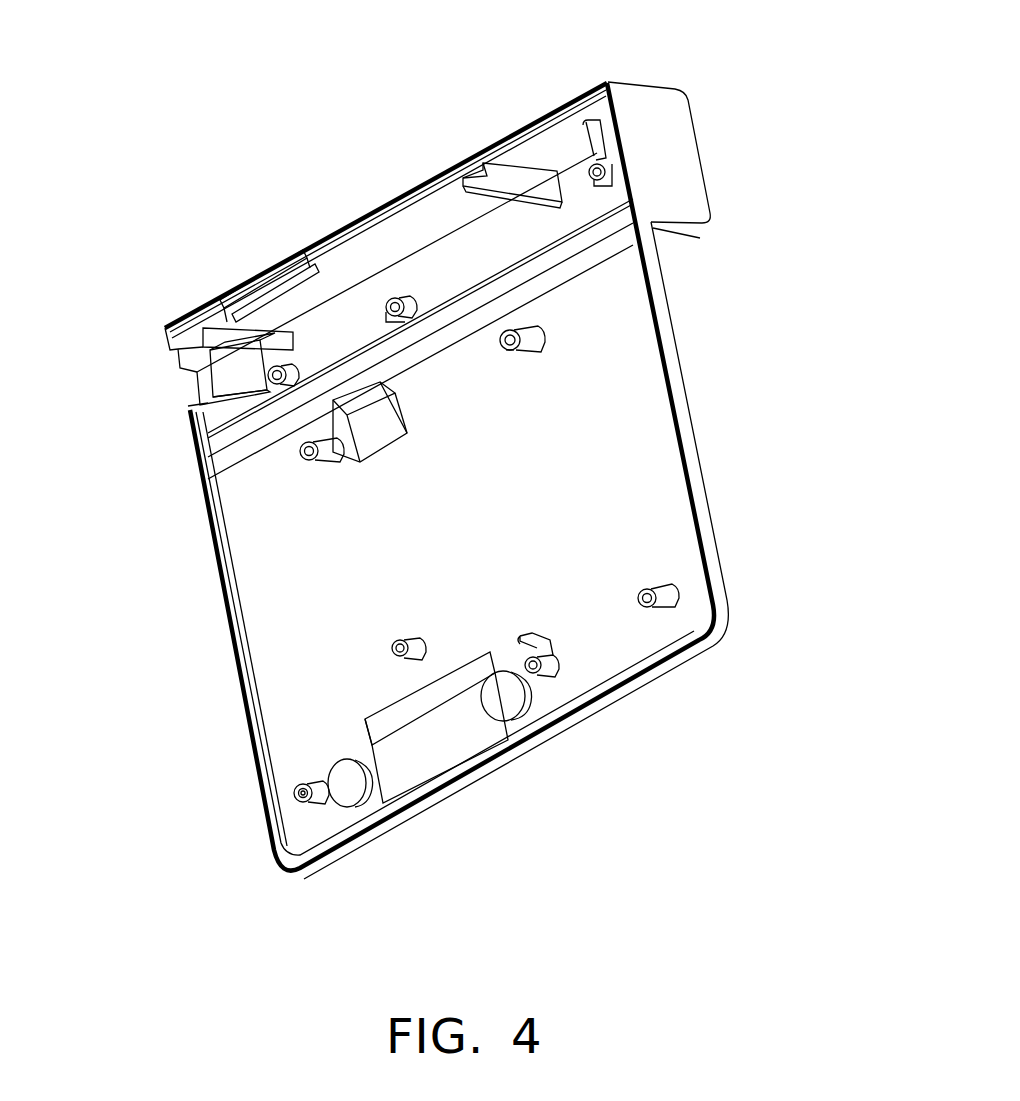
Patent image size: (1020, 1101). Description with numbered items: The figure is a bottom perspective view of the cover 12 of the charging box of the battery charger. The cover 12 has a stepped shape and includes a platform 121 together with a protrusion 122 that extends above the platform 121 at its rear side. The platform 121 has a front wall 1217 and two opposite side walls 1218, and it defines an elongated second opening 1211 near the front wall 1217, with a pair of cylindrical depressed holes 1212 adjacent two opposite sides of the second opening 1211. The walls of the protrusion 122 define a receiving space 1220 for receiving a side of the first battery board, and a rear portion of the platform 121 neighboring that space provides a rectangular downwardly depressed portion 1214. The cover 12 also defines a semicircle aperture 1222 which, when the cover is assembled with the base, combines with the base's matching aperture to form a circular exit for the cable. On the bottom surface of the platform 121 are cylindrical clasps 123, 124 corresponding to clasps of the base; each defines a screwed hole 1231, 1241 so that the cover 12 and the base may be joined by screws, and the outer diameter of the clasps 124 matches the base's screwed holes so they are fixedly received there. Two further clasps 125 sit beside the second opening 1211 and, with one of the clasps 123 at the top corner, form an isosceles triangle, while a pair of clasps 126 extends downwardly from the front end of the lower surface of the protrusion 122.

The cover 12 is at (365, 31).
The platform 121 is at (712, 562).
The protrusion 122 is at (666, 146).
The cylindrical clasps 123 is at (610, 158).
The cylindrical clasps 124 is at (300, 455).
The clasps 125 is at (548, 652).
The clasps 126 is at (285, 368).
The second opening 1211 is at (447, 742).
The cylindrical depressed hole 1212 is at (506, 700).
The depressed portion 1214 is at (358, 445).
The front wall 1217 is at (620, 700).
The side walls 1218 is at (704, 522).
The receiving space 1220 is at (477, 255).
The semicircle aperture 1222 is at (187, 380).
The screwed hole 1231 is at (298, 790).
The screwed hole 1241 is at (520, 352).